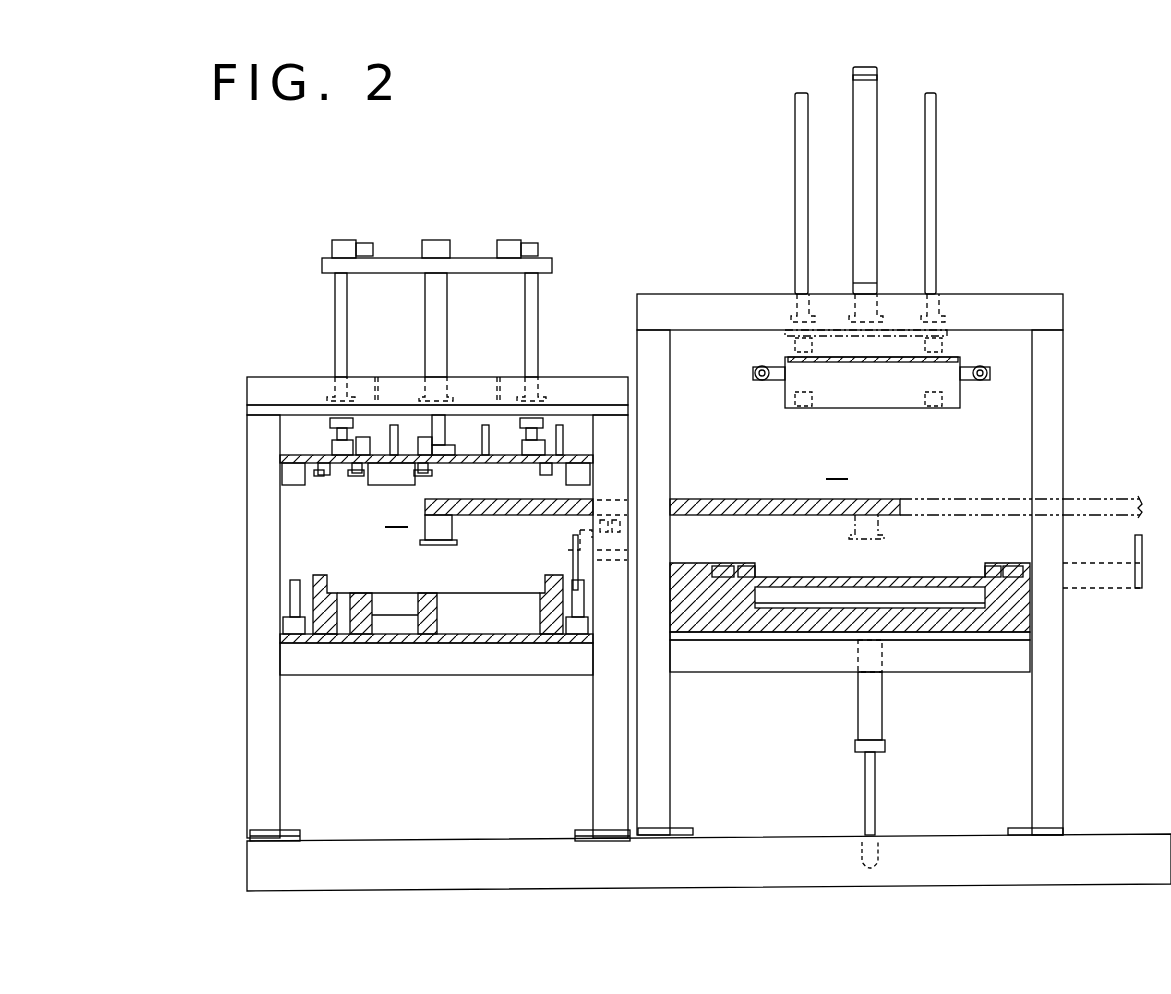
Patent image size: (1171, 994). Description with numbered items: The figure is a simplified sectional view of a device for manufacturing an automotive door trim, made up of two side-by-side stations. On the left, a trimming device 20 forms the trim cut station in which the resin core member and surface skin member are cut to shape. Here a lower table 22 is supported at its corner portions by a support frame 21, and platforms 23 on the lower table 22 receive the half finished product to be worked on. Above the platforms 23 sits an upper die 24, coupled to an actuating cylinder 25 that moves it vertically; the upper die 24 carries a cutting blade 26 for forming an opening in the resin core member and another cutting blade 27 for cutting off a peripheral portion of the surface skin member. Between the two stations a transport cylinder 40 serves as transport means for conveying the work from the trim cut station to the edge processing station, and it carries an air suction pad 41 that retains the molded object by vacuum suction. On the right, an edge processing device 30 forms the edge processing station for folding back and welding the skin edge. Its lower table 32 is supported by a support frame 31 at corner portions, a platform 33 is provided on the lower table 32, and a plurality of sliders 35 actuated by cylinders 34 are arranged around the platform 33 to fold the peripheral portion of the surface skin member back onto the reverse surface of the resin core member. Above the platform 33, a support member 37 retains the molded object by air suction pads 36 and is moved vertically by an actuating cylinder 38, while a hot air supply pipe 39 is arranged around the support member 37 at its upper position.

The trimming device 20 is at (262, 358).
The support frame 21 is at (256, 550).
The lower table 22 is at (393, 640).
The platforms 23 is at (430, 635).
The upper die 24 is at (470, 462).
The actuating cylinder 25 is at (446, 306).
The cutting blade 26 is at (378, 487).
The cutting blade 27 is at (320, 485).
The edge processing device 30 is at (1010, 430).
The support frame 31 is at (1053, 622).
The lower table 32 is at (935, 640).
The platform 33 is at (820, 625).
The cylinders 34 is at (728, 618).
The sliders 35 is at (752, 580).
The air suction pads 36 is at (808, 405).
The support member 37 is at (892, 393).
The actuating cylinder 38 is at (865, 175).
The hot air supply pipe 39 is at (976, 355).
The transport cylinder 40 is at (713, 497).
The air suction pad 41 is at (452, 538).